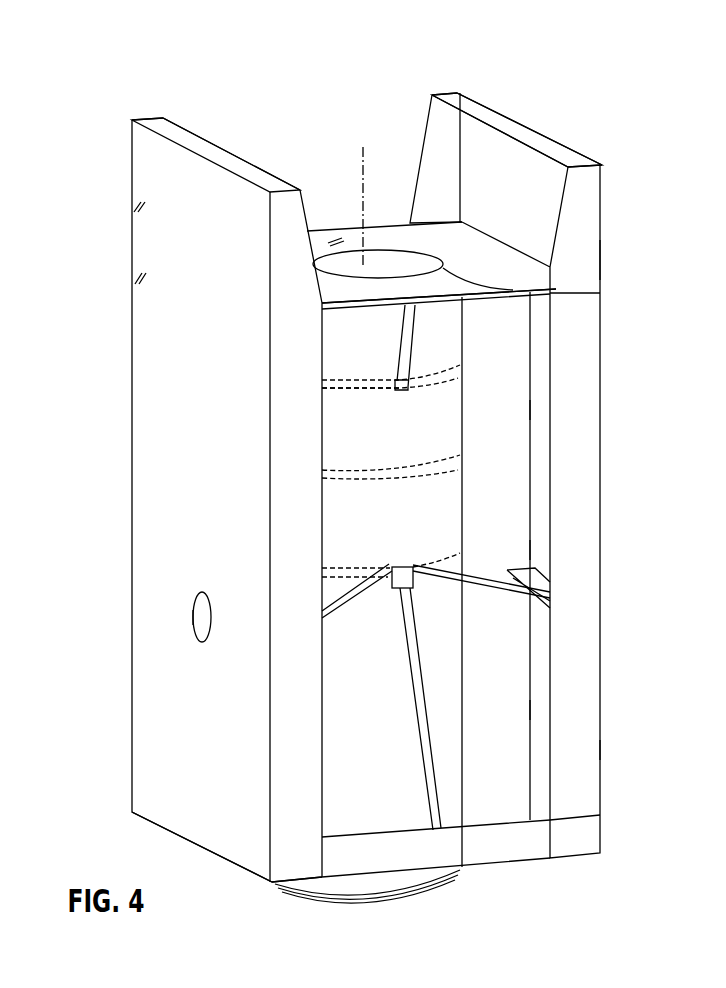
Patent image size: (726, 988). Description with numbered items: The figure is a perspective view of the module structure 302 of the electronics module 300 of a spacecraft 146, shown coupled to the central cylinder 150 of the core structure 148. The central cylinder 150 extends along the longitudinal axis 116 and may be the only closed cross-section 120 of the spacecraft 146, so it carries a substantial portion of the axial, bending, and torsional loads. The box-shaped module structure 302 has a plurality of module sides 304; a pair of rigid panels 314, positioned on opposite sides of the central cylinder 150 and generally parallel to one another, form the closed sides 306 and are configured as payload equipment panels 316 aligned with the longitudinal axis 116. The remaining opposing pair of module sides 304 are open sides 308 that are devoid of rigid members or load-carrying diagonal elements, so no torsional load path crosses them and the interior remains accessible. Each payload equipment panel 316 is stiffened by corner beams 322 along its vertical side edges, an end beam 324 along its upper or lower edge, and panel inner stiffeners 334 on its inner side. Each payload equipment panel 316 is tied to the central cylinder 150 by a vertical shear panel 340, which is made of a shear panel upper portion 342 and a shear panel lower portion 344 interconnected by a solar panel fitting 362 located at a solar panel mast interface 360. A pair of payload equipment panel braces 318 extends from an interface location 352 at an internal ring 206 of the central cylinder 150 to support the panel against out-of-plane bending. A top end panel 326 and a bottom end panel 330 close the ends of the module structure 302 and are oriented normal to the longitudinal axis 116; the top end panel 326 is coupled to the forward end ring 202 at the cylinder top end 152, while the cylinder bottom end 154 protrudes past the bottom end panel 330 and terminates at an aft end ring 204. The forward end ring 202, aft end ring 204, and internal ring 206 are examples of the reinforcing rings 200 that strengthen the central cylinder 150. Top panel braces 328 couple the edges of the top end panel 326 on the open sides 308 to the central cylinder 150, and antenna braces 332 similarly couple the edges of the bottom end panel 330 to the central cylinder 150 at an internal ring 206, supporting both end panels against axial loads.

The longitudinal axis 116 is at (363, 168).
The closed cross-section 120 is at (447, 500).
The spacecraft 146 is at (598, 165).
The core structure 148 is at (447, 532).
The central cylinder 150 is at (447, 480).
The cylinder top end 152 is at (600, 294).
The cylinder bottom end 154 is at (465, 885).
The reinforcing rings 200 is at (452, 378).
The forward end ring 202 is at (438, 312).
The aft end ring 204 is at (417, 913).
The internal ring 206 is at (412, 380).
The electronics module 300 is at (132, 118).
The module structure 302 is at (130, 148).
The module sides 304 is at (135, 240).
The closed sides 306 is at (132, 307).
The open sides 308 is at (299, 92).
The rigid panels 314 is at (132, 203).
The payload equipment panels 316 is at (133, 278).
The payload equipment panel braces 318 is at (350, 593).
The corner beams 322 is at (292, 785).
The end beam 324 is at (180, 133).
The top end panel 326 is at (338, 236).
The top panel braces 328 is at (403, 331).
The bottom end panel 330 is at (340, 880).
The antenna braces 332 is at (418, 683).
The panel inner stiffeners 334 is at (463, 607).
The vertical shear panels 340 is at (495, 408).
The shear panel upper portion 342 is at (508, 548).
The shear panel lower portion 344 is at (513, 710).
The interface locations 352 is at (405, 387).
The solar panel mast interface 360 is at (192, 607).
The solar panel fitting 362 is at (192, 627).